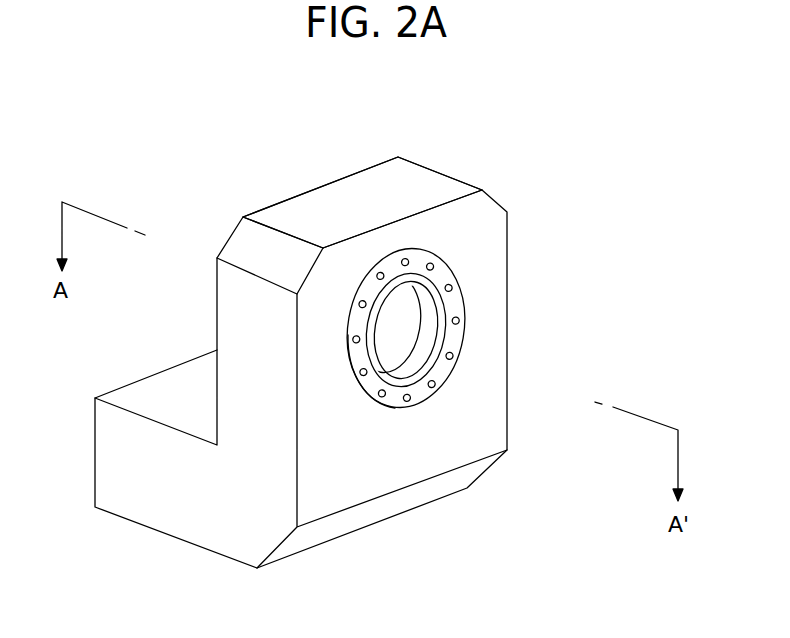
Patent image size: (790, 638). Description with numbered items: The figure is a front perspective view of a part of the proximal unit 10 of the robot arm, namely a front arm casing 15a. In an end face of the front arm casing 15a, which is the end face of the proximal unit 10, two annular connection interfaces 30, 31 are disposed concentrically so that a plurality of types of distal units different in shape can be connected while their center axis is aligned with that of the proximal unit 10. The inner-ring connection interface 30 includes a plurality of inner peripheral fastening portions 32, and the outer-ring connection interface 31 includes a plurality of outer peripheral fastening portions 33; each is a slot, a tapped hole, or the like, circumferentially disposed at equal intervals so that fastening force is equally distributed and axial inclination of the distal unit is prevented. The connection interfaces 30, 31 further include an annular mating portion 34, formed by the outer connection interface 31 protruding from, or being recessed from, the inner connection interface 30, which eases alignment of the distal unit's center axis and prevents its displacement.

The proximal unit 10 is at (550, 137).
The front arm casing 15a is at (346, 203).
The connection interface 30 is at (443, 332).
The connection interface 31 is at (444, 270).
The inner peripheral fastening portions 32 is at (373, 342).
The outer peripheral fastening portions 33 is at (382, 272).
The mating portion 34 is at (352, 374).